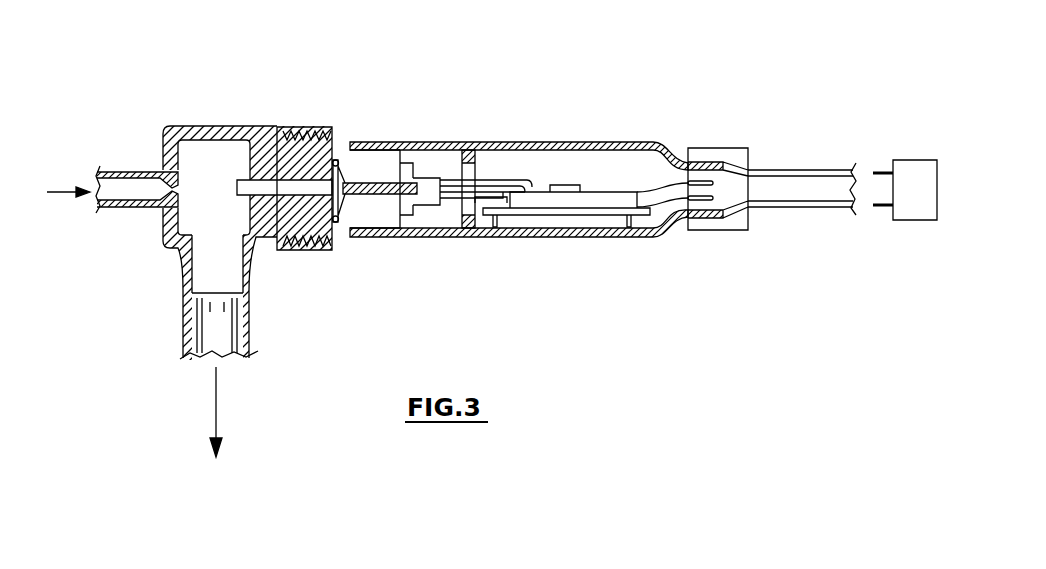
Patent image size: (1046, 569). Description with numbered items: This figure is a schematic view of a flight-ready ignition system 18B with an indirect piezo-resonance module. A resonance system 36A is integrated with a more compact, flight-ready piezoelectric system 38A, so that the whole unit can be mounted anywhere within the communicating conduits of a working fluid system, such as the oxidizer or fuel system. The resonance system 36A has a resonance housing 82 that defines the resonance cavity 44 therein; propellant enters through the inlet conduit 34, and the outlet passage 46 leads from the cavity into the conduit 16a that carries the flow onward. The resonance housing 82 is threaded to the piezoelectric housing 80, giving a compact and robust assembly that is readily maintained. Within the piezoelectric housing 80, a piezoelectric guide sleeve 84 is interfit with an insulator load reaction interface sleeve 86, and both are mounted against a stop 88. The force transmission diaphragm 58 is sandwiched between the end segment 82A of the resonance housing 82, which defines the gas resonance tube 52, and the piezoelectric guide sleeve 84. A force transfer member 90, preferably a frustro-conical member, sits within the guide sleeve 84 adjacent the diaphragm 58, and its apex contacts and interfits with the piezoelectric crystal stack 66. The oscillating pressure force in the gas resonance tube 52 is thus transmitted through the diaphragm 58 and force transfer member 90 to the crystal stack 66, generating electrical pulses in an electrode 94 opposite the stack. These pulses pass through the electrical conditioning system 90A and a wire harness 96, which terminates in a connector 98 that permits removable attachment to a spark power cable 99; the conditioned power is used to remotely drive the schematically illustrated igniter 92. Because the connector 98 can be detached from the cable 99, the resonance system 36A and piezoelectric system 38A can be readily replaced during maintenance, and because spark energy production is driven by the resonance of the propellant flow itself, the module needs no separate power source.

The resonance housing 82 is at (175, 126).
The end segment of the resonance housing 82A is at (313, 129).
The resonance cavity 44 is at (230, 172).
The outlet passage 46 is at (193, 238).
The inlet conduit 34 is at (131, 208).
The resonance system 36A is at (135, 292).
The conduit 16a is at (249, 328).
The gas resonance tube 52 is at (265, 189).
The force transmission diaphragm 58 is at (350, 143).
The force transfer member 90 is at (508, 141).
The piezoelectric housing 80 is at (523, 142).
The piezoelectric guide sleeve 84 is at (375, 157).
The piezoelectric crystal stack 66 is at (405, 183).
The insulator load reaction interface sleeve 86 is at (442, 217).
The electrode 94 is at (427, 178).
The stop 88 is at (475, 149).
The electrical conditioning system 90A is at (610, 208).
The wire harness 96 is at (652, 192).
The connector 98 is at (720, 148).
The spark power cable 99 is at (817, 189).
The igniter 92 is at (908, 212).
The ignition system 18B is at (758, 65).
The piezoelectric system 38A is at (429, 288).